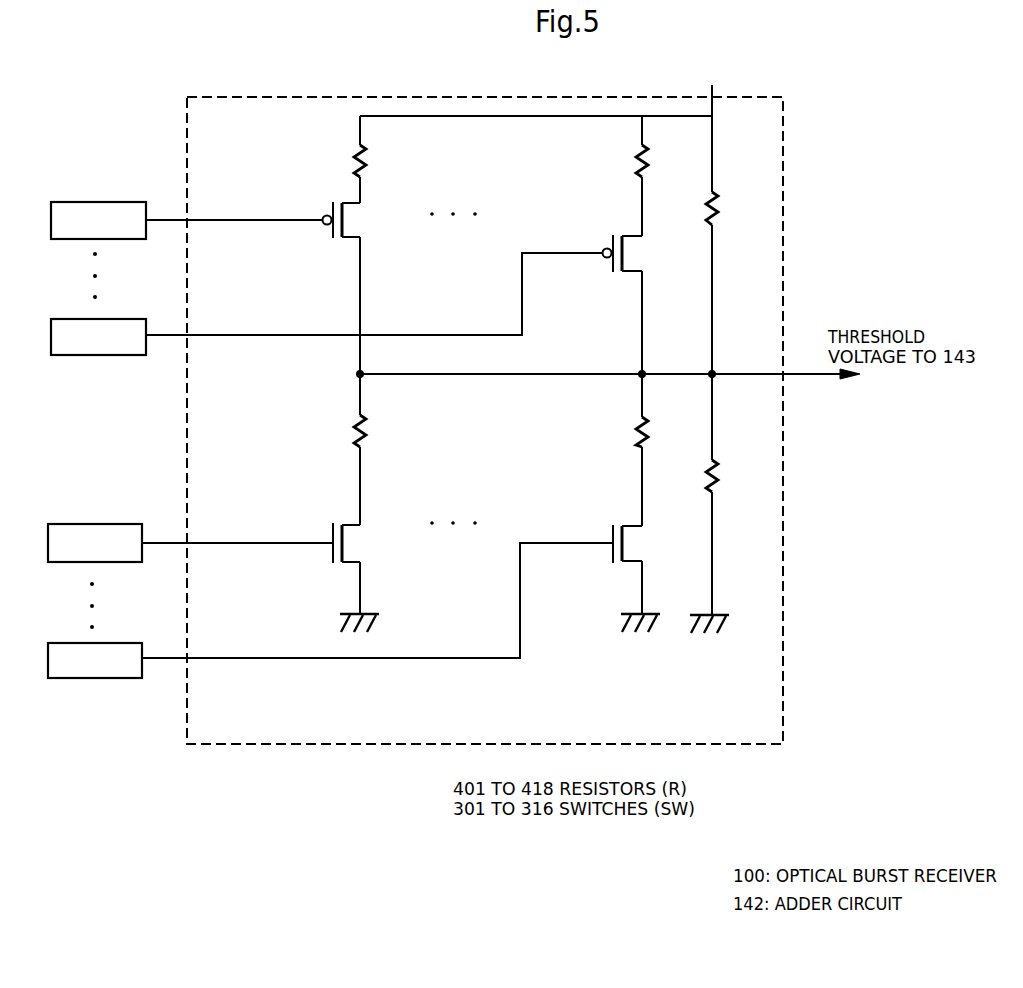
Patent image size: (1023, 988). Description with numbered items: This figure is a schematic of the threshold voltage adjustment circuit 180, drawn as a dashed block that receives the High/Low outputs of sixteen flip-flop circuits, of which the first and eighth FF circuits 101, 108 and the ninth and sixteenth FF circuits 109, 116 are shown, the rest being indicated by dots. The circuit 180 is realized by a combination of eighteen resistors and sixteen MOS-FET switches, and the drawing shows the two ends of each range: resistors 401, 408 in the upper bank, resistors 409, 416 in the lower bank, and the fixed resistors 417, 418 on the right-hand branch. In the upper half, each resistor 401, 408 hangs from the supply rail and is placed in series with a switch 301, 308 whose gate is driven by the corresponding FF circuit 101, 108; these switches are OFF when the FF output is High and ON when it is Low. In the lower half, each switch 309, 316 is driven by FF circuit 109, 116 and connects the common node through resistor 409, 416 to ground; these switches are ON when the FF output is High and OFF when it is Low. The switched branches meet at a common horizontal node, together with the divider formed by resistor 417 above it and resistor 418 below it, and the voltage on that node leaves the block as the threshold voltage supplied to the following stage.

The FF circuit 101 is at (108, 202).
The FF circuit 108 is at (110, 319).
The FF circuit 109 is at (117, 524).
The FF circuit 116 is at (117, 643).
The threshold voltage adjustment circuit 180 is at (783, 128).
The MOS-FET switch 301 is at (331, 230).
The MOS-FET switch 308 is at (611, 267).
The MOS-FET switch 309 is at (331, 528).
The MOS-FET switch 316 is at (611, 560).
The resistor 401 is at (370, 150).
The resistor 408 is at (634, 156).
The resistor 409 is at (370, 420).
The resistor 416 is at (635, 419).
The resistor 417 is at (715, 195).
The resistor 418 is at (714, 462).